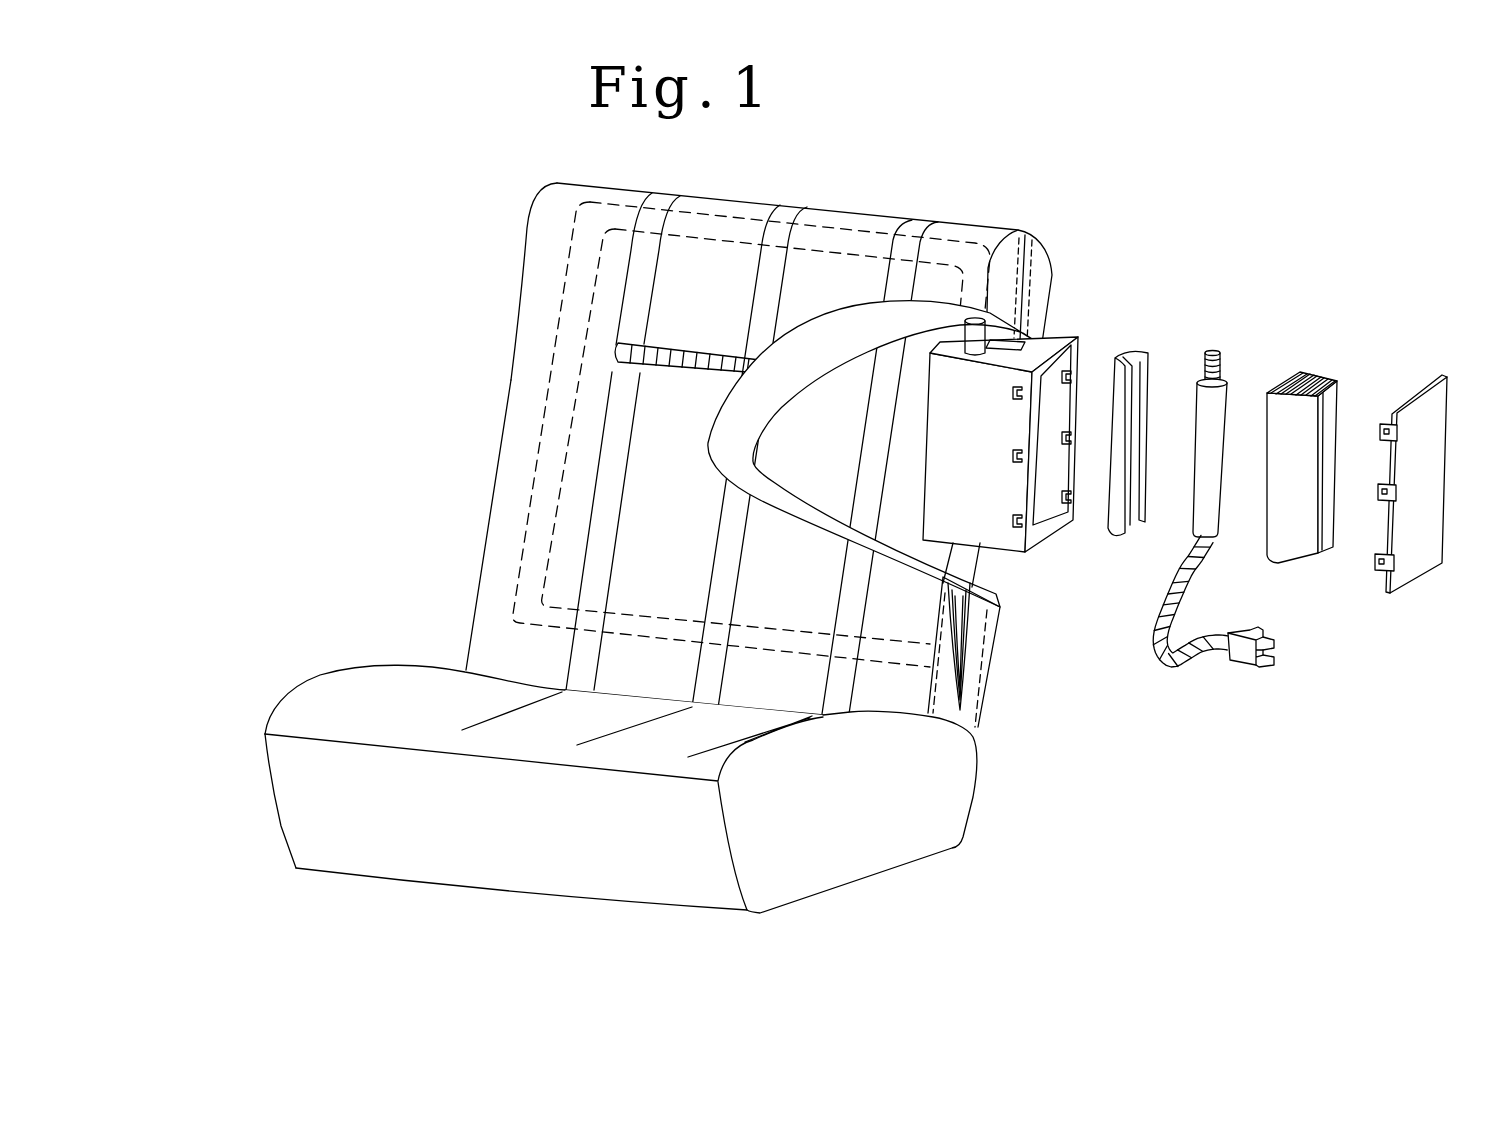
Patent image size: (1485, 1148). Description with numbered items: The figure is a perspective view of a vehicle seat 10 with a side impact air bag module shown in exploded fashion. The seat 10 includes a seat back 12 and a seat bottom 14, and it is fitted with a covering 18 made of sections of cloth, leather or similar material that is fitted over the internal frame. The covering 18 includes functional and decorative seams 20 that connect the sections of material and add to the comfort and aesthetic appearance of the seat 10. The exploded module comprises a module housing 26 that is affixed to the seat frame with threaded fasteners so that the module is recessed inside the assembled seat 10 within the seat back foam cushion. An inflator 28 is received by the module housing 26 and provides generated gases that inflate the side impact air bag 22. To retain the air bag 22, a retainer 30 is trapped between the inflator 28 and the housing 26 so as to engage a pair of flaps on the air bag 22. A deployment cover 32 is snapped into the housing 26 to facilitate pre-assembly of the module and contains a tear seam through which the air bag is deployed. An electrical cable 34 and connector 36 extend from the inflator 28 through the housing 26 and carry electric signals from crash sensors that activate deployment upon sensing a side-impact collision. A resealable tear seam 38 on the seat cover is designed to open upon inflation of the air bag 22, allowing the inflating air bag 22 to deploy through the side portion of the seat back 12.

The vehicle seat 10 is at (1060, 250).
The seat back 12 is at (523, 384).
The seat bottom 14 is at (296, 811).
The covering 18 is at (497, 582).
The seams 20 is at (653, 190).
The side impact air bag 22 is at (1330, 382).
The module housing 26 is at (925, 440).
The inflator 28 is at (1197, 405).
The retainer 30 is at (1113, 543).
The deployment cover 32 is at (1427, 577).
The electrical cable 34 is at (1173, 663).
The connector 36 is at (1275, 660).
The resealable tear seam 38 is at (960, 610).